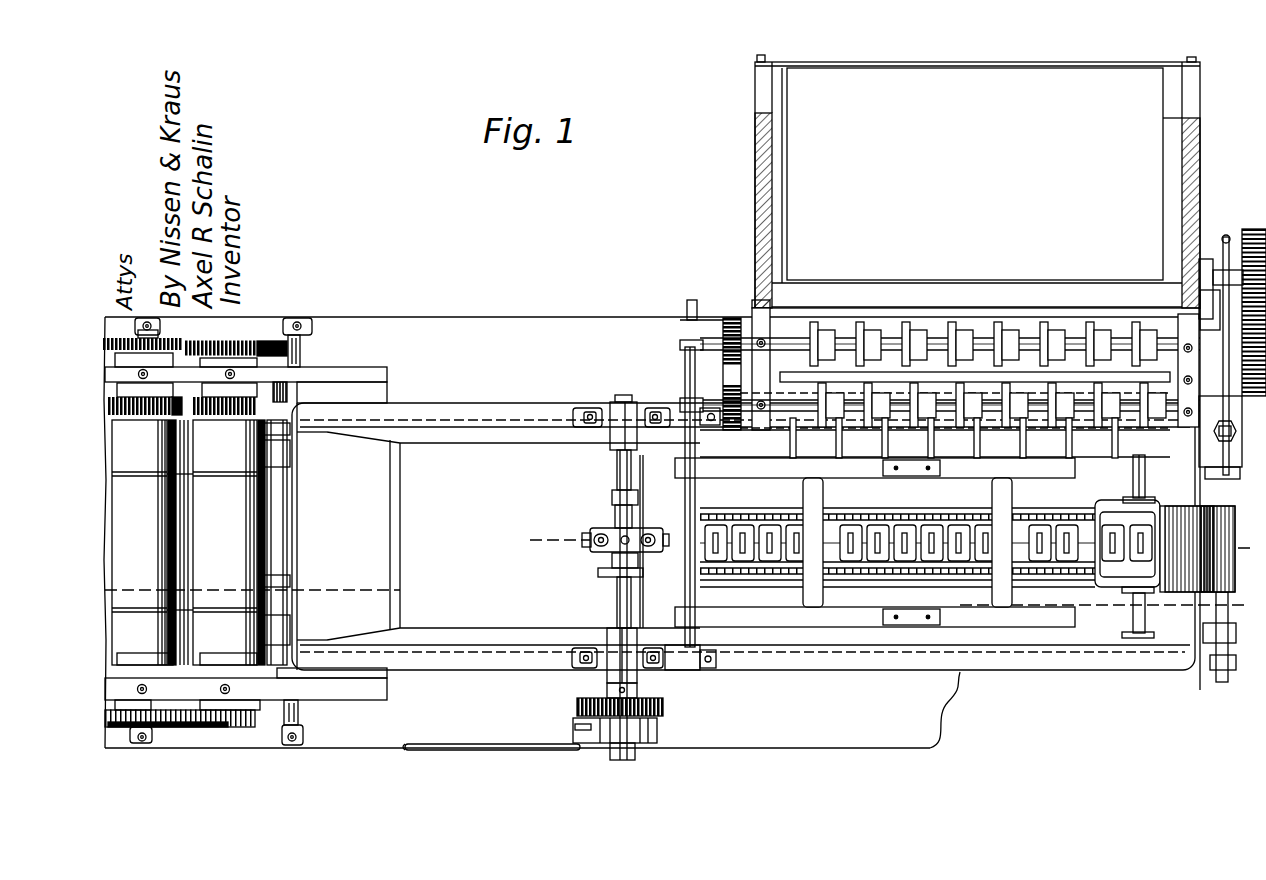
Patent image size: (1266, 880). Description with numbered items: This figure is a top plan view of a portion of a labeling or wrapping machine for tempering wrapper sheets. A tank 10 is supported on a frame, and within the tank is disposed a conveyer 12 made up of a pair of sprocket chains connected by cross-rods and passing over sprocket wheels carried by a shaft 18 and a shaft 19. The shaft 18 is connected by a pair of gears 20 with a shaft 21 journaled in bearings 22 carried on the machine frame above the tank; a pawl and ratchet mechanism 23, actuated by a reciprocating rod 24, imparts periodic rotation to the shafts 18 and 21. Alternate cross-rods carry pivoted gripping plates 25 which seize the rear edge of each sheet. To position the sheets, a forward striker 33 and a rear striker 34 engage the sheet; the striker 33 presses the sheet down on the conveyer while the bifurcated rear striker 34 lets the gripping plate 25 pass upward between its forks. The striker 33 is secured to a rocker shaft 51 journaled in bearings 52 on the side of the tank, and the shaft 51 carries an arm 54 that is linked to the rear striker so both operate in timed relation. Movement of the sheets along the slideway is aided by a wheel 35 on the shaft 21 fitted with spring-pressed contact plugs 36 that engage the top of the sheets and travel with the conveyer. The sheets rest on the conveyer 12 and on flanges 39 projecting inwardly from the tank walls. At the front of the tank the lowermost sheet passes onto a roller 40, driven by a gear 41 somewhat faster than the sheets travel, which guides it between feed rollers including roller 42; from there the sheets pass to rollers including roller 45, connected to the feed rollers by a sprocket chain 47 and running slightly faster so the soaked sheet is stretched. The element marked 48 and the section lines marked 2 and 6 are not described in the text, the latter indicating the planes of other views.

The tank 10 is at (1004, 668).
The conveyer 12 is at (1043, 572).
The shaft 18 is at (633, 612).
The shaft 19 is at (1133, 472).
The gears 20 is at (663, 712).
The shaft 21 is at (617, 607).
The bearings 22 is at (615, 410).
The pawl and ratchet mechanism 23 is at (657, 728).
The reciprocating rod 24 is at (465, 746).
The gripping plates 25 is at (1036, 535).
The forward striker 33 is at (958, 470).
The rear striker 34 is at (1182, 510).
The wheel 35 is at (610, 525).
The spring-pressed contact plugs 36 is at (592, 535).
The flanges 39 is at (435, 437).
The roller 40 is at (272, 563).
The gear 41 is at (270, 320).
The feed roller 42 is at (225, 542).
The roller 45 is at (139, 542).
The sprocket chain 47 is at (187, 722).
The roller 48 is at (182, 575).
The rocker shaft 51 is at (696, 487).
The bearings 52 is at (700, 669).
The arm 54 is at (688, 410).
The section line 2- 2 is at (107, 575).
The section line 6- 6 is at (517, 520).